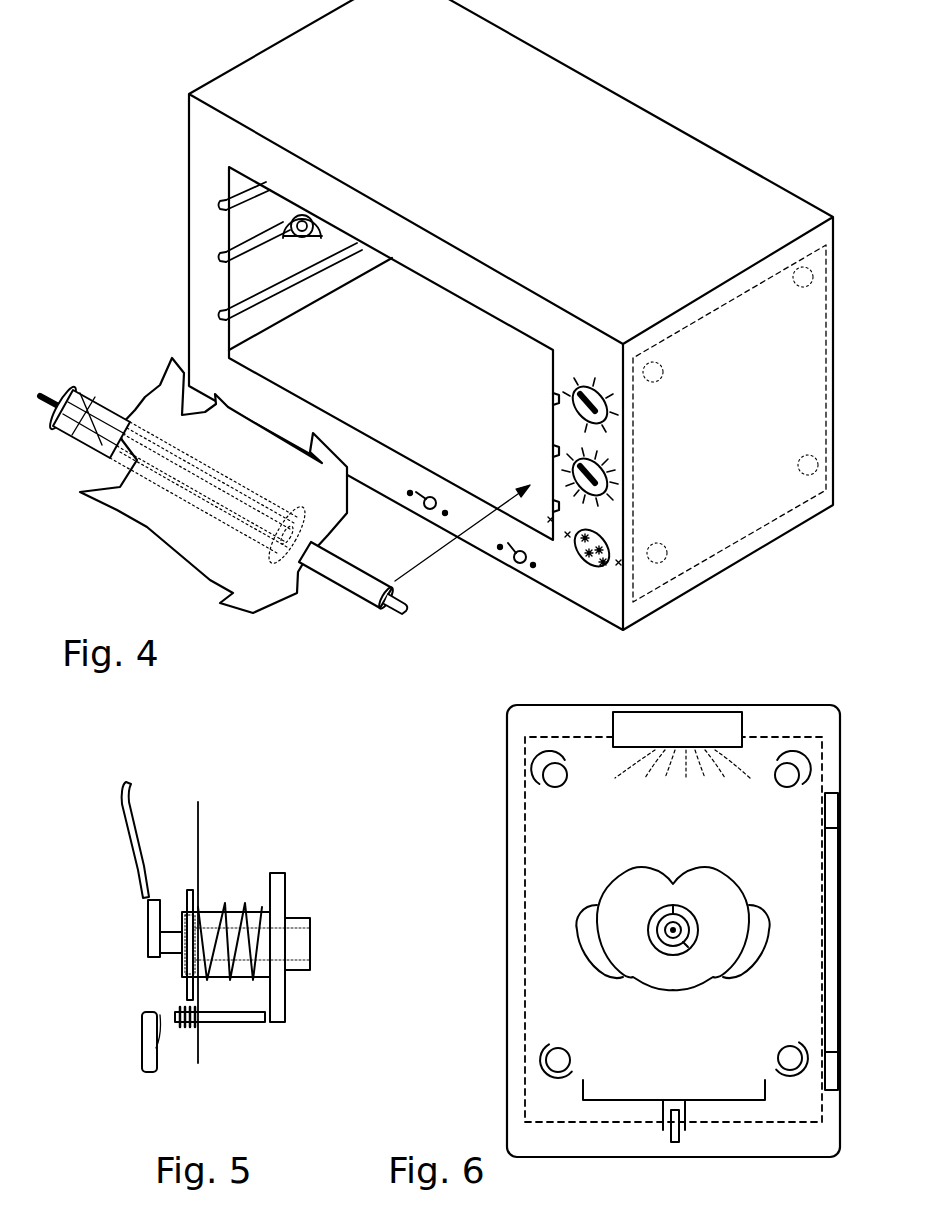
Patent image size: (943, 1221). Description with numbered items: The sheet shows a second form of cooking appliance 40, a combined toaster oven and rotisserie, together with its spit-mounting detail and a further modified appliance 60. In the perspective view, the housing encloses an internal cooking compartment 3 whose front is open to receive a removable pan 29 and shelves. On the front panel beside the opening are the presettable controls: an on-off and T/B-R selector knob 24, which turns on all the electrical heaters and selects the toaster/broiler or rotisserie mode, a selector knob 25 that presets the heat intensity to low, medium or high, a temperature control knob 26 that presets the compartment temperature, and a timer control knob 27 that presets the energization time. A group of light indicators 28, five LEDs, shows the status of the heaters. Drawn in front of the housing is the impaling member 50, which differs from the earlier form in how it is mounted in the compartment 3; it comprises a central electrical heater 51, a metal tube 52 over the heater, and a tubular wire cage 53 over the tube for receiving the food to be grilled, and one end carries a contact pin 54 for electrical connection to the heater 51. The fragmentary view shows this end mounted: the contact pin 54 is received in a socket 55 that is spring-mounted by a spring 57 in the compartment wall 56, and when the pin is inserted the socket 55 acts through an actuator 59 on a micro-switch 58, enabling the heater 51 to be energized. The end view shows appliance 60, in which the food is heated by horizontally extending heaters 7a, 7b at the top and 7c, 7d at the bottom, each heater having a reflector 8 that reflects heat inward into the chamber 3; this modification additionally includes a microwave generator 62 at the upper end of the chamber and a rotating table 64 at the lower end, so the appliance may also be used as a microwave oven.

In FIG. 4, the internal cooking compartment 3 is at (467, 439).
In FIG. 4, the on-off and T/B-R selector knob 24 is at (431, 512).
In FIG. 4, the selector knob 25 is at (518, 570).
In FIG. 4, the temperature control knob 26 is at (586, 385).
In FIG. 4, the timer control knob 27 is at (606, 455).
In FIG. 4, the light indicators 28 is at (593, 568).
In FIG. 4, the removable pan 29 is at (738, 532).
In FIG. 4, the appliance 40 is at (842, 225).
In FIG. 4, the impaling member 50 is at (340, 543).
In FIG. 4, the central electrical heater 51 is at (400, 620).
In FIG. 4, the metal tube 52 is at (405, 590).
In FIG. 4, the tubular wire cage 53 is at (300, 512).
In FIG. 4, the contact pin 54 is at (60, 393).
In FIG. 5, the socket 55 is at (311, 913).
In FIG. 5, the compartment wall 56 is at (200, 817).
In FIG. 5, the spring 57 is at (225, 905).
In FIG. 5, the micro-switch 58 is at (145, 1072).
In FIG. 5, the actuator 59 is at (228, 1017).
In FIG. 6, the appliance 60 is at (505, 942).
In FIG. 6, the microwave generator 62 is at (680, 723).
In FIG. 6, the rotating table 64 is at (643, 1100).
In FIG. 6, the heater 7a is at (560, 787).
In FIG. 6, the heater 7b is at (785, 787).
In FIG. 6, the heater 7c is at (569, 1047).
In FIG. 6, the heater 7d is at (783, 1047).
In FIG. 6, the reflector 8 is at (533, 762).